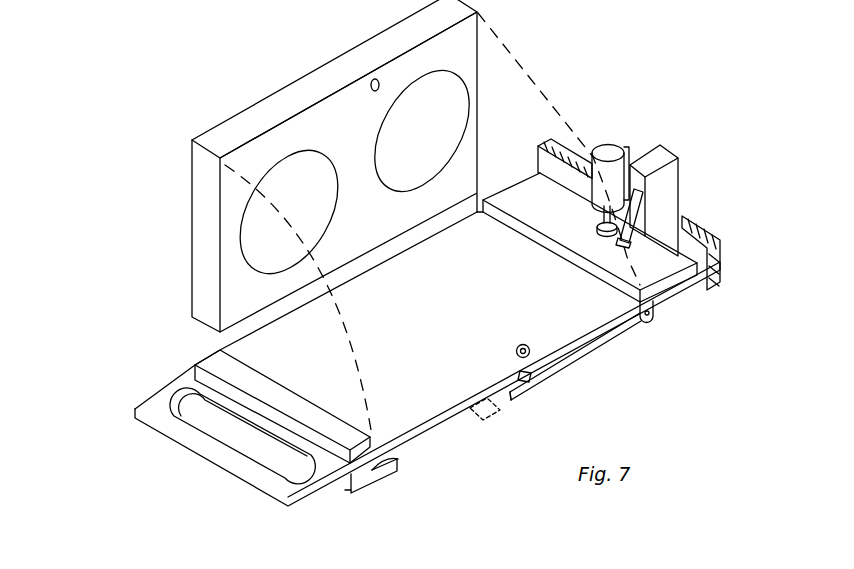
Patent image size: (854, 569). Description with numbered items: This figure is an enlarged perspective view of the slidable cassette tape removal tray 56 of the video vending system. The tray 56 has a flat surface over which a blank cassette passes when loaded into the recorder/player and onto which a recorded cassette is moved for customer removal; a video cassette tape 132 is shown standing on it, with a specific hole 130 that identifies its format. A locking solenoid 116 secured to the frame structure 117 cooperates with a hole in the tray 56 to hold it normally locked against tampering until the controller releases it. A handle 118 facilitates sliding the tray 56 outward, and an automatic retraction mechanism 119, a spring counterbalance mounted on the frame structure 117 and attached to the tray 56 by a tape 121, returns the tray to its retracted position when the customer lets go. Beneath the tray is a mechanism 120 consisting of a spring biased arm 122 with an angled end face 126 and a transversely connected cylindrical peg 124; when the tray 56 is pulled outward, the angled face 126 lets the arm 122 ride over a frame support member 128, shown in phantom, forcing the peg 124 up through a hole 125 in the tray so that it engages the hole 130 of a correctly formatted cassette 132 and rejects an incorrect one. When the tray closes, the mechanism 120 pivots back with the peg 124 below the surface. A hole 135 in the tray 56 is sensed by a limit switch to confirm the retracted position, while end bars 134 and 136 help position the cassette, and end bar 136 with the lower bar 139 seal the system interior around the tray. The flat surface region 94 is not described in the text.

The cassette tape removal tray 56 is at (208, 348).
The base plate 94 is at (427, 359).
The locking solenoid 116 is at (605, 150).
The frame structure 117 is at (687, 248).
The handle 118 is at (185, 433).
The automatic retraction mechanism 119 is at (664, 157).
The mechanism 120 is at (574, 360).
The tape 121 is at (636, 218).
The spring biased arm 122 is at (610, 334).
The cylindrical peg 124 is at (531, 348).
The hole 125 is at (516, 351).
The angled end face 126 is at (520, 399).
The frame support member 128 is at (498, 422).
The hole 130 is at (369, 82).
The video cassette tape 132 is at (221, 133).
The end bar 134 is at (670, 294).
The hole 135 is at (544, 190).
The end bar 136 is at (397, 471).
The lower bar 139 is at (342, 496).